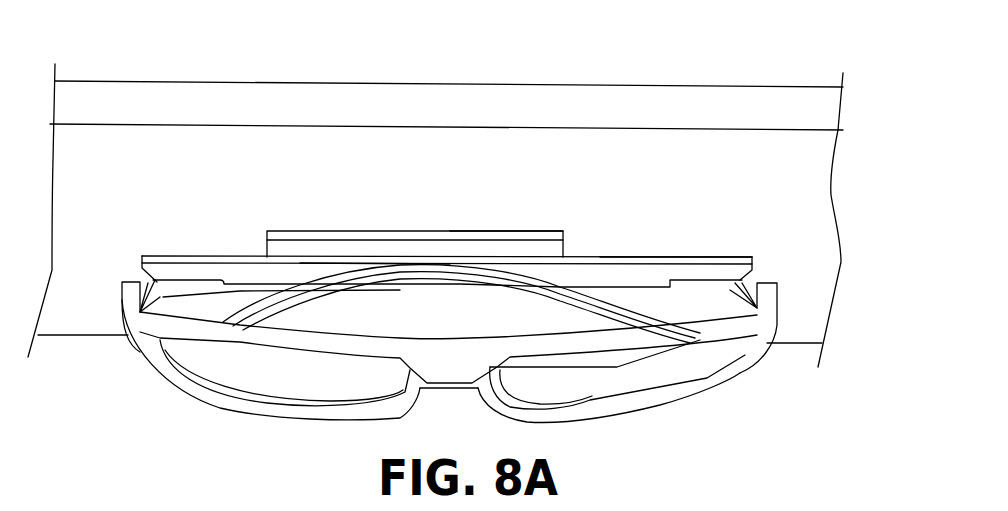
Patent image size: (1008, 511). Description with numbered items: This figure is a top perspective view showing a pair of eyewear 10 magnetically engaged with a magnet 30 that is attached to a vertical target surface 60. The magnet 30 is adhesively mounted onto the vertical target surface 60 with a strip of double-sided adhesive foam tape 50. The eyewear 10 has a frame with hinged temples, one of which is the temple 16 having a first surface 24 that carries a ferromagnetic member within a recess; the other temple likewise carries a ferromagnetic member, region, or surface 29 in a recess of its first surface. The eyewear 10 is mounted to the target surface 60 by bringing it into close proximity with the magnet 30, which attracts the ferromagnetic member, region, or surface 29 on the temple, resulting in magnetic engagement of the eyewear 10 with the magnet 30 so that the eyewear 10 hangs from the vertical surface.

The eyewear 10 is at (177, 405).
The temple 16 is at (257, 257).
The first surface 24 is at (662, 257).
The ferromagnetic member, region, or surface 29 is at (418, 255).
The magnet 30 is at (392, 248).
The double-sided adhesive foam tape 50 is at (556, 230).
The vertical target surface 60 is at (197, 177).